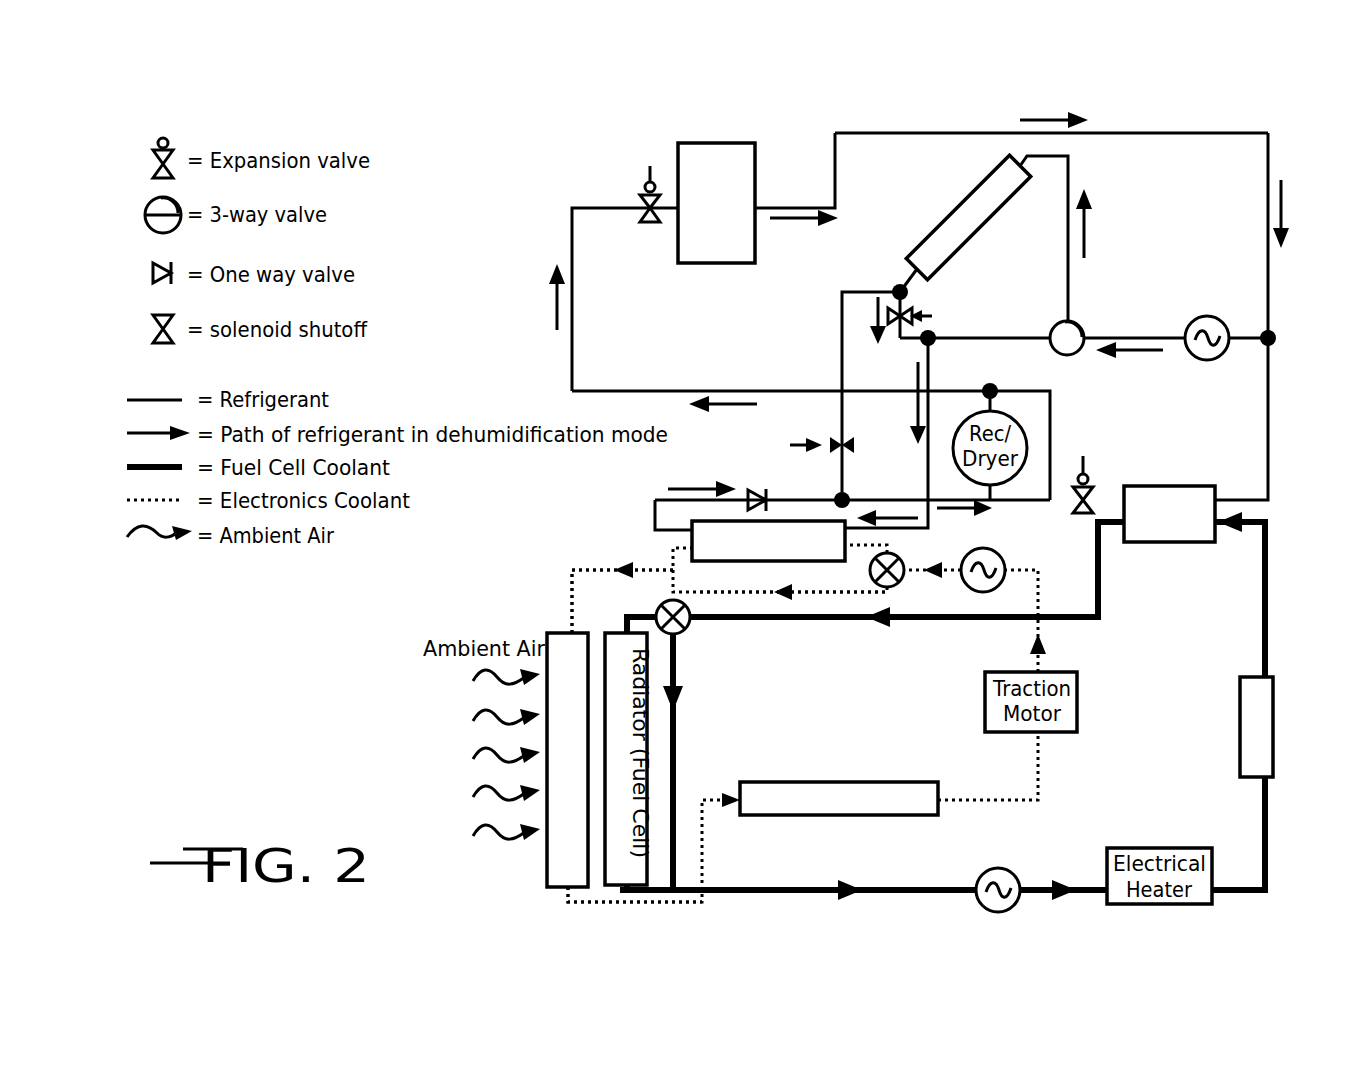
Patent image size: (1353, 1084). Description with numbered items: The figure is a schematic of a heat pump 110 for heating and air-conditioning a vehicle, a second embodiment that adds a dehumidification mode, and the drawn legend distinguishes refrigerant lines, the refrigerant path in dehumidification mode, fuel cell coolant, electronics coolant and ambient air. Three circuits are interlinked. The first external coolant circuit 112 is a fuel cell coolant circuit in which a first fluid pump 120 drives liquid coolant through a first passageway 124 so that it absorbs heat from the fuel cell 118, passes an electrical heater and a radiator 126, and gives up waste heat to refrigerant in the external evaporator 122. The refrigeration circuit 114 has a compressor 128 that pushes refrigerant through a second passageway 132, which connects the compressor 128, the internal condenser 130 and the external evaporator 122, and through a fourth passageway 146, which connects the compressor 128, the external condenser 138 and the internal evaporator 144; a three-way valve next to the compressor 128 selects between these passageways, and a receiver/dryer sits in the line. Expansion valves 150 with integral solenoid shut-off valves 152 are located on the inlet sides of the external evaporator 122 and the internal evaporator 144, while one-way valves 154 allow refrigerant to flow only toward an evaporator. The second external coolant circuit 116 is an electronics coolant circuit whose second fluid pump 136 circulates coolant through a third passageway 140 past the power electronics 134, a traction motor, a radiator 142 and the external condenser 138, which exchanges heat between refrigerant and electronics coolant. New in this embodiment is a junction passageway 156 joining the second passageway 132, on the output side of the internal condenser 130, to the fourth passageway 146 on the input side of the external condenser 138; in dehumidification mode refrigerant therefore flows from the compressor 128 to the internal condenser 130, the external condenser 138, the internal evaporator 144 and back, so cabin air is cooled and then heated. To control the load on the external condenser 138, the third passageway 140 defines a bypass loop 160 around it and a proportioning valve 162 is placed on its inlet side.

The heat pump 110 is at (1320, 124).
The first external coolant circuit 112 is at (1265, 591).
The refrigeration circuit 114 is at (1268, 170).
The second external coolant circuit 116 is at (585, 903).
The fuel cell 118 is at (1273, 717).
The first fluid pump 120 is at (994, 911).
The external evaporator 122 is at (1140, 542).
The first passageway 124 is at (1265, 823).
The radiator 126 is at (615, 891).
The compressor 128 is at (1205, 360).
The internal condenser 130 is at (989, 221).
The second passageway 132 is at (1268, 421).
The power electronics 134 is at (767, 815).
The second fluid pump 136 is at (1000, 553).
The external condenser 138 is at (738, 561).
The third passageway 140 is at (572, 580).
The radiator 142 is at (547, 855).
The internal evaporator 144 is at (755, 143).
The fourth passageway 146 is at (835, 133).
The expansion valve 150 is at (645, 200).
The shut-off valve 152 is at (650, 166).
The one-way valve 154 is at (757, 490).
The junction passageway 156 is at (901, 331).
The bypass loop 160 is at (812, 592).
The proportioning valve 162 is at (898, 583).